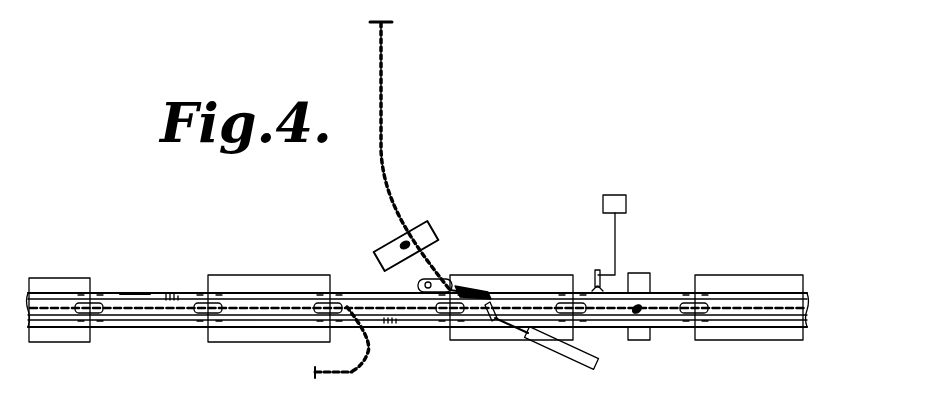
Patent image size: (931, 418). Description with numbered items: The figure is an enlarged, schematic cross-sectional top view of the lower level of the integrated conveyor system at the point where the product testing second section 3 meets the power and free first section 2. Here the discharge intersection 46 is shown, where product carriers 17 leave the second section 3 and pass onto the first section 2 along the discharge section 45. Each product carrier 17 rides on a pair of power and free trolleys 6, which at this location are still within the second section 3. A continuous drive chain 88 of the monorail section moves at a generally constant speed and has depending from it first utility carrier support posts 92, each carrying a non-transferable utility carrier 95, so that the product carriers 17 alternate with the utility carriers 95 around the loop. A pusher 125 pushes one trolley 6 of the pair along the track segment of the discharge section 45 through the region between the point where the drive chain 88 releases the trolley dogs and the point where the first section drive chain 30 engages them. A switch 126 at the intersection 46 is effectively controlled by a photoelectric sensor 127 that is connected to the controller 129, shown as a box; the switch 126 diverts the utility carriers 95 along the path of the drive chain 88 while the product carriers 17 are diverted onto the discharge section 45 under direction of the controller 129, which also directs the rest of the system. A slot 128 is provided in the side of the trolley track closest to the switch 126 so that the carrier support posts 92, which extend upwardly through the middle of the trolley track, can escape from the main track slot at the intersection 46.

The first section 2 is at (163, 327).
The second section 3 is at (683, 328).
The power and free trolleys 6 is at (97, 325).
The product carriers 17 is at (76, 342).
The first section drive chain 30 is at (349, 374).
The discharge section 45 is at (133, 295).
The intersection 46 is at (415, 339).
The drive chain 88 is at (383, 134).
The first utility carrier support posts 92 is at (416, 246).
The first utility carrier 95 is at (428, 221).
The pusher 125 is at (574, 362).
The switch 126 is at (418, 285).
The photoelectric sensor 127 is at (598, 269).
The slot 128 is at (468, 284).
The controller 129 is at (628, 205).